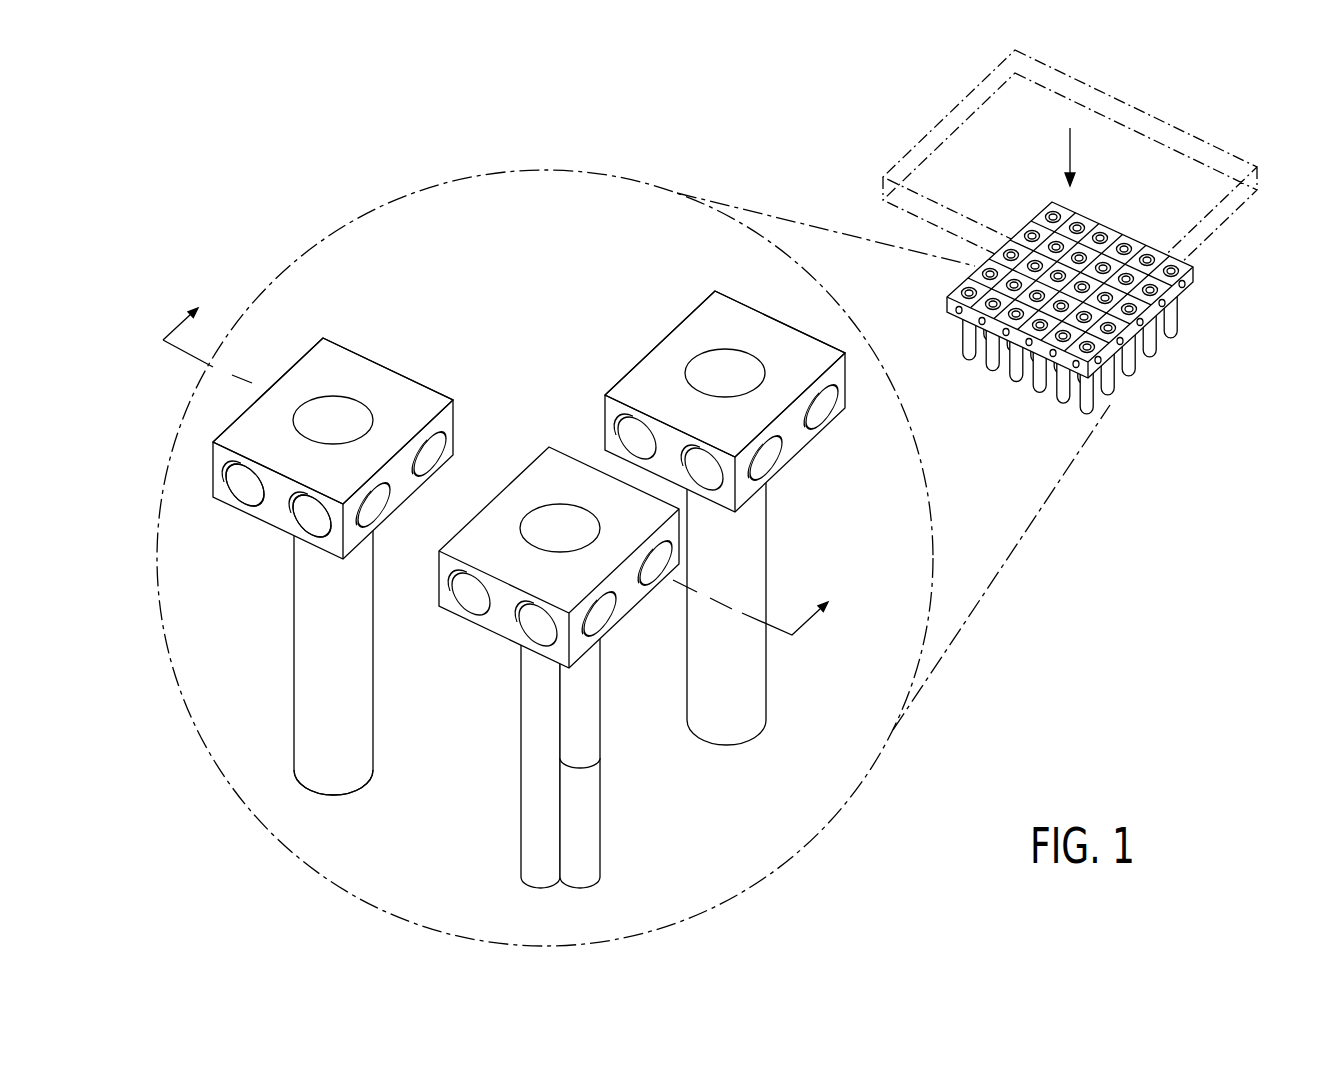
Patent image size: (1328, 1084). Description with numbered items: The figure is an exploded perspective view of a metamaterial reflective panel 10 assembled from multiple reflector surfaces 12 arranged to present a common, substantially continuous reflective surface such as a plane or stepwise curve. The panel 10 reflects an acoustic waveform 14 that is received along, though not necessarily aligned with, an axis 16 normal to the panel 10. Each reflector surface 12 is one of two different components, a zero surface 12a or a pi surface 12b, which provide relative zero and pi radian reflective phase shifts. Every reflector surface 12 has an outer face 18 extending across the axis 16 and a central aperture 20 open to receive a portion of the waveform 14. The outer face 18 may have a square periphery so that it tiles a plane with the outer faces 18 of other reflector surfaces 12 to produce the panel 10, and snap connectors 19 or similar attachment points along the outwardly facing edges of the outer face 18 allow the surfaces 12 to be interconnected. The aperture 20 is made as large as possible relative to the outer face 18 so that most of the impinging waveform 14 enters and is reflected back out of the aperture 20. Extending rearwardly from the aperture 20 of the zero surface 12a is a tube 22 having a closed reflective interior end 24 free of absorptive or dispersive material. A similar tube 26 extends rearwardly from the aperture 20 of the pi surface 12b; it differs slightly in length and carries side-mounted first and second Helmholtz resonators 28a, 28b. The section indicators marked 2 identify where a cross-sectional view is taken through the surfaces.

The section line for FIG. 2 is at (495, 458).
The metamaterial reflective panel 10 is at (1093, 323).
The reflector surface 12 is at (1060, 372).
The zero surface 12a is at (529, 428).
The pi surface 12b is at (550, 473).
The acoustic waveform 14 is at (1222, 222).
The axis 16 is at (1068, 150).
The outer face 18 is at (410, 392).
The snap connectors 19 is at (300, 516).
The central aperture 20 is at (335, 405).
The tube 22 is at (303, 642).
The closed reflective interior end 24 is at (358, 804).
The tube 26 is at (533, 748).
The first Helmholtz resonator 28a is at (588, 718).
The second Helmholtz resonator 28b is at (588, 819).